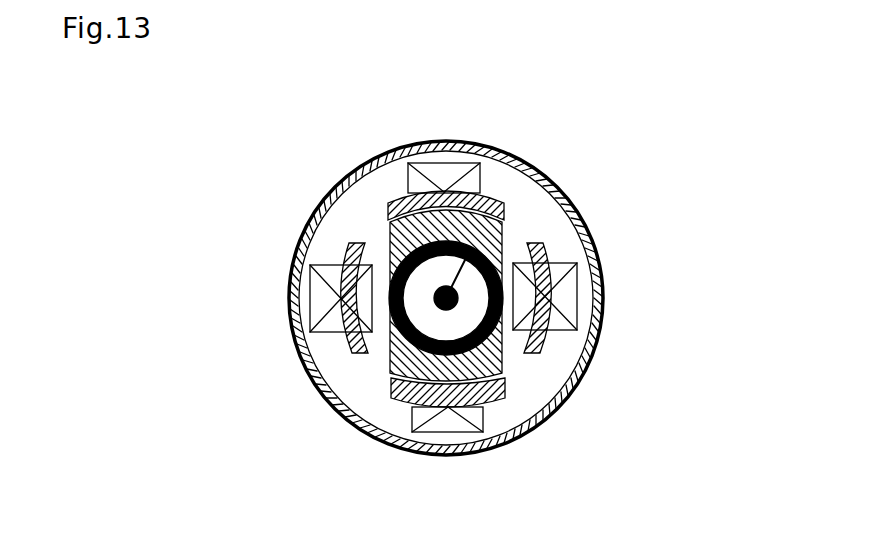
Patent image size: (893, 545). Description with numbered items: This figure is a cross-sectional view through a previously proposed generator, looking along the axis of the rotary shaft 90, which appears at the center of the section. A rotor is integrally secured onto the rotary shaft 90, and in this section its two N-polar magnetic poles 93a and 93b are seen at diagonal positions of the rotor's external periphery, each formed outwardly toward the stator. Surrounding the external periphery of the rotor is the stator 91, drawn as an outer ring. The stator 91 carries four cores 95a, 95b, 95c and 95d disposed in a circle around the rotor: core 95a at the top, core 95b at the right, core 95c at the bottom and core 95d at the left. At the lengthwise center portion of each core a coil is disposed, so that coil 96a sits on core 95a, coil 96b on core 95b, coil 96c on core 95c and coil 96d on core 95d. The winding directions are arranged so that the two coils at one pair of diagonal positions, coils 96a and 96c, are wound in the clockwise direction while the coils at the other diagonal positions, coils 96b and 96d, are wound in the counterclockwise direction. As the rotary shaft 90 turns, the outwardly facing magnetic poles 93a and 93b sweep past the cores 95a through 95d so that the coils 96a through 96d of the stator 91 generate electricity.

The rotary shaft 90 is at (504, 237).
The stator 91 is at (497, 181).
The N-polar magnetic pole 93a is at (410, 163).
The N-polar magnetic pole 93b is at (507, 400).
The core 95a is at (500, 203).
The core 95b is at (548, 347).
The core 95c is at (390, 402).
The core 95d is at (342, 256).
The coil 96a is at (462, 163).
The coil 96b is at (578, 285).
The coil 96c is at (449, 432).
The coil 96d is at (310, 318).